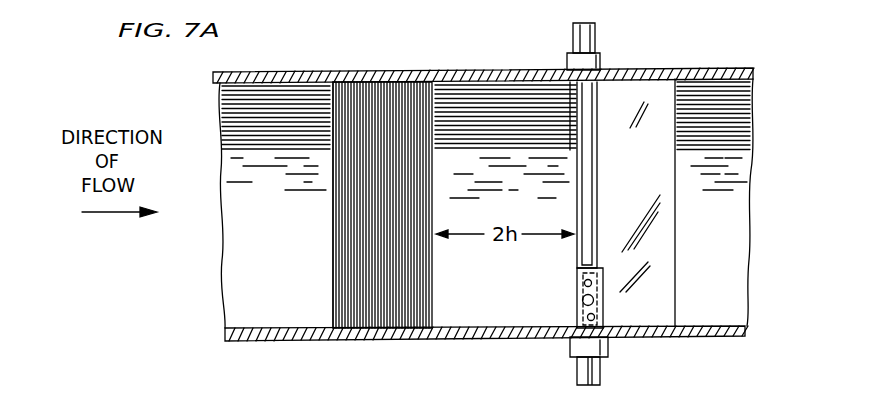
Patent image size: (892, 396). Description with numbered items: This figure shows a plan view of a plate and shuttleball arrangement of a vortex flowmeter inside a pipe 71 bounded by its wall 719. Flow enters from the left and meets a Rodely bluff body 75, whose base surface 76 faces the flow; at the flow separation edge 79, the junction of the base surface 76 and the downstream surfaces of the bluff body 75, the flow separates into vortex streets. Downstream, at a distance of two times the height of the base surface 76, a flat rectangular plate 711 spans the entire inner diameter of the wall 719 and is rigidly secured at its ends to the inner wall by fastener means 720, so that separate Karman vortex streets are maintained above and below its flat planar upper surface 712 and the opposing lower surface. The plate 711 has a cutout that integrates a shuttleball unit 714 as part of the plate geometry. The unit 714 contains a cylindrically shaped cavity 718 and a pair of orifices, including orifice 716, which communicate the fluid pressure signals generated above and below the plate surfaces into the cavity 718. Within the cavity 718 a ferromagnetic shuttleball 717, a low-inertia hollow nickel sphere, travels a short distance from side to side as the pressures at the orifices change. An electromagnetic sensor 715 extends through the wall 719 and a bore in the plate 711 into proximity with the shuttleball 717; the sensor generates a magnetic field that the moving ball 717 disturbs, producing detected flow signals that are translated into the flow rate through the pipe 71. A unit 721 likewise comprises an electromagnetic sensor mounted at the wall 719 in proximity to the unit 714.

The pipe 71 is at (430, 71).
The flow separation edge 79 is at (326, 96).
The bluff body 75 is at (340, 203).
The base surface 76 is at (333, 254).
The wall 719 is at (525, 86).
The fastener means 720 is at (570, 86).
The electromagnetic sensor 715 is at (600, 42).
The shuttleball unit 714 is at (578, 277).
The cavity 718 is at (583, 293).
The shuttleball 717 is at (594, 300).
The orifice 716 is at (595, 318).
The unit 721 is at (600, 365).
The plate 711 is at (661, 88).
The upper surface 712 is at (668, 200).